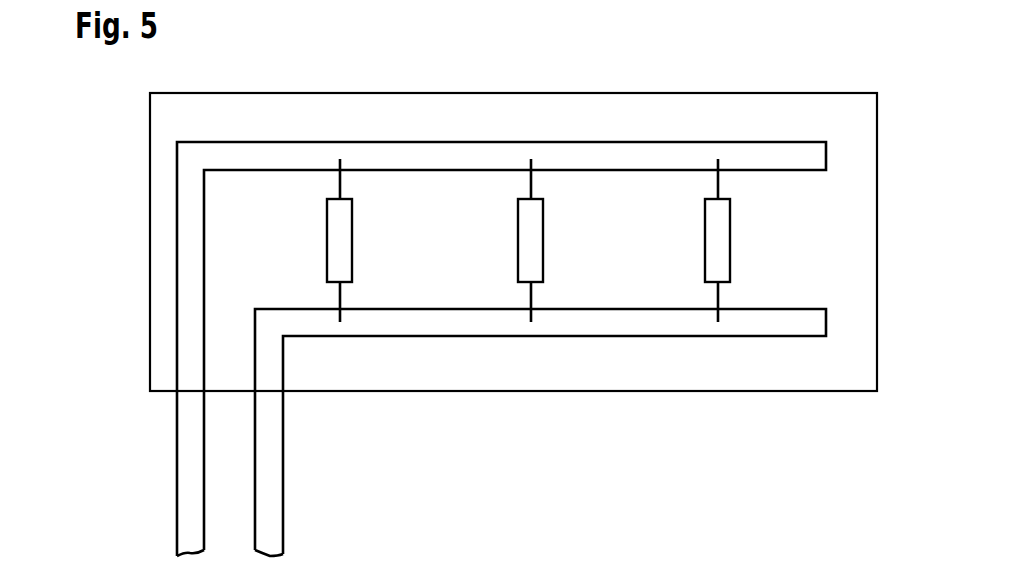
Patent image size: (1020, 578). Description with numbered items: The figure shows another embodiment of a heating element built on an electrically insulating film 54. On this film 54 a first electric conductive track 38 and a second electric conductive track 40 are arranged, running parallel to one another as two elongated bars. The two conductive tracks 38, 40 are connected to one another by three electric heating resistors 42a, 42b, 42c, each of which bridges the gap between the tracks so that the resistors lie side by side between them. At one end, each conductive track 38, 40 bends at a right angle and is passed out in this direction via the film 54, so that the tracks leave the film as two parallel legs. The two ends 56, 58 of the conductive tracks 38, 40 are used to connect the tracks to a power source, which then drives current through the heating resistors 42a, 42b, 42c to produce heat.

The first electric conductive track 38 is at (462, 157).
The second electric conductive track 40 is at (597, 322).
The electric heating resistor 42a is at (345, 246).
The electric heating resistor 42b is at (537, 246).
The electric heating resistor 42c is at (724, 247).
The electrically insulating film 54 is at (475, 363).
The end of conductive track 56 is at (189, 497).
The end of conductive track 58 is at (275, 510).